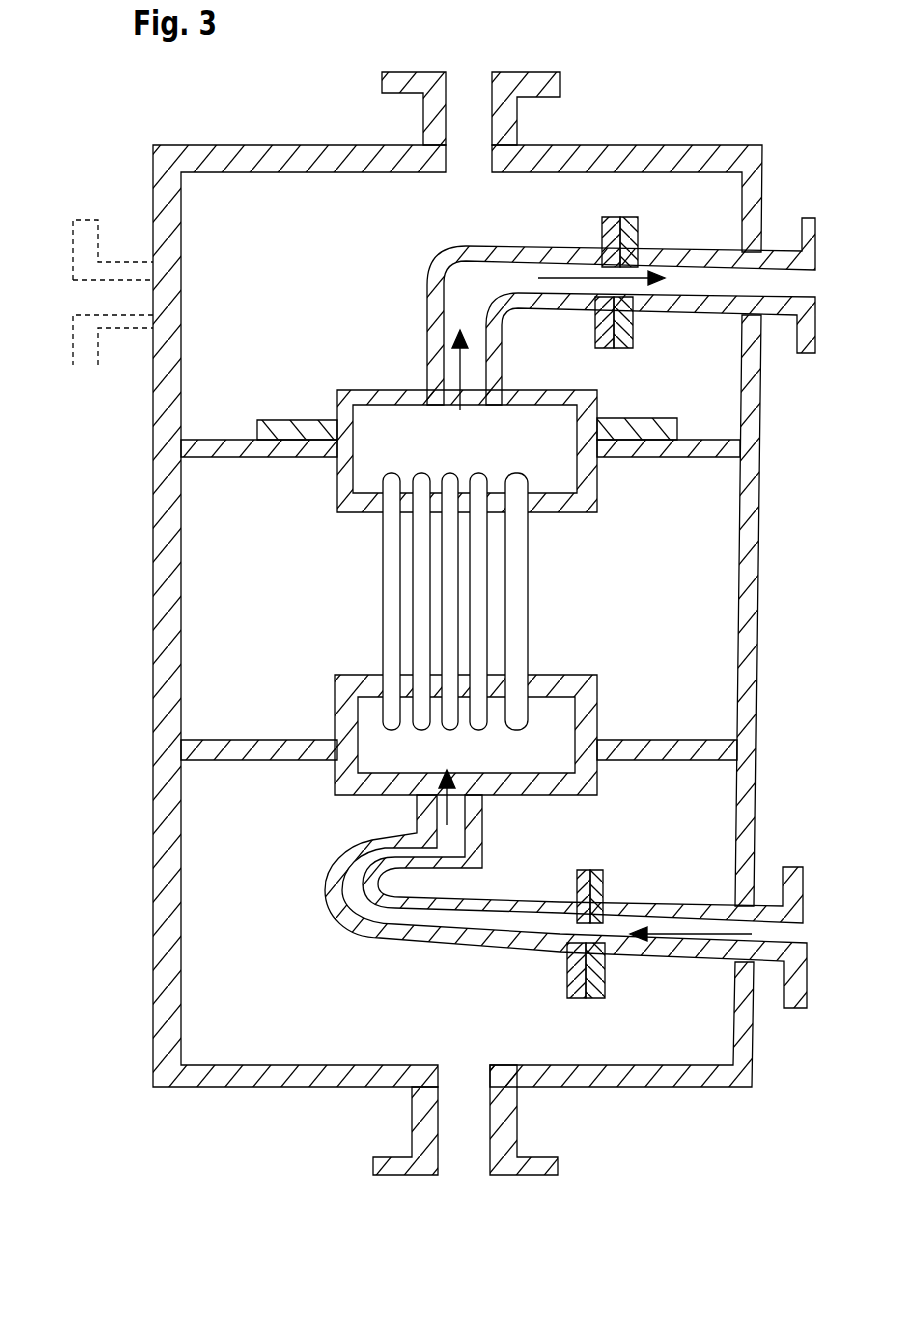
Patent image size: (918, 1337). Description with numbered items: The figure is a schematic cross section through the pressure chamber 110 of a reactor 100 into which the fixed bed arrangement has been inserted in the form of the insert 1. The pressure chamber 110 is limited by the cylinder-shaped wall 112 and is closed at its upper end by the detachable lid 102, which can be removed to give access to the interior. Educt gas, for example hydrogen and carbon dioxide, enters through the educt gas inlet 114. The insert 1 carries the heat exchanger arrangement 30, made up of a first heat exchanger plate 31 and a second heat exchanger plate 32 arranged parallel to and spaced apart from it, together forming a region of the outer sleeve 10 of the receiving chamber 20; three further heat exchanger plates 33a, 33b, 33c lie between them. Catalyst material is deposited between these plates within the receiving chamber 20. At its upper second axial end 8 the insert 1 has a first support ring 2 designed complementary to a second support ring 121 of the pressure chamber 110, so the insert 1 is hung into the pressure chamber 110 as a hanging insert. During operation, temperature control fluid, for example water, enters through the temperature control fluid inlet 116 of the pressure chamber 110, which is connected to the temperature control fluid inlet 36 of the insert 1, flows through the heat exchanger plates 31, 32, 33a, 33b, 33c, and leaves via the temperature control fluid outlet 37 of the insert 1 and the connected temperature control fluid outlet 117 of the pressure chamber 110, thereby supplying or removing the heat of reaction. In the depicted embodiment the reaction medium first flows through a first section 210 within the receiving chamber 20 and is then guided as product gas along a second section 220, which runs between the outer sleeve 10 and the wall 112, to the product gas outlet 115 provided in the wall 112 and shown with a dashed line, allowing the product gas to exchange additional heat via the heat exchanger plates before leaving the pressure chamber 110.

The reactor 100 is at (434, 630).
The product gas outlet 115 is at (68, 228).
The educt gas inlet 114 is at (385, 75).
The detachable lid 102 is at (323, 145).
The temperature control fluid outlet of the insert 37 is at (605, 217).
The temperature control fluid outlet 117 is at (634, 258).
The insert 1 is at (476, 567).
The second axial end 8 is at (597, 403).
The first support ring 2 is at (257, 420).
The second support ring 121 is at (722, 437).
The wall 112 is at (150, 485).
The pressure chamber 110 is at (418, 630).
The second section 220 is at (217, 710).
The further heat exchanger plate 33a is at (417, 470).
The further heat exchanger plate 33b is at (450, 601).
The further heat exchanger plate 33c is at (478, 601).
The second heat exchanger plate 32 is at (383, 550).
The first heat exchanger plate 31 is at (528, 548).
The outer sleeve 10 is at (460, 577).
The heat exchanger arrangement 30 is at (460, 577).
The receiving chamber 20 is at (489, 722).
The first section 210 is at (497, 662).
The temperature control fluid inlet 116 is at (566, 949).
The temperature control fluid inlet of the insert 36 is at (567, 998).